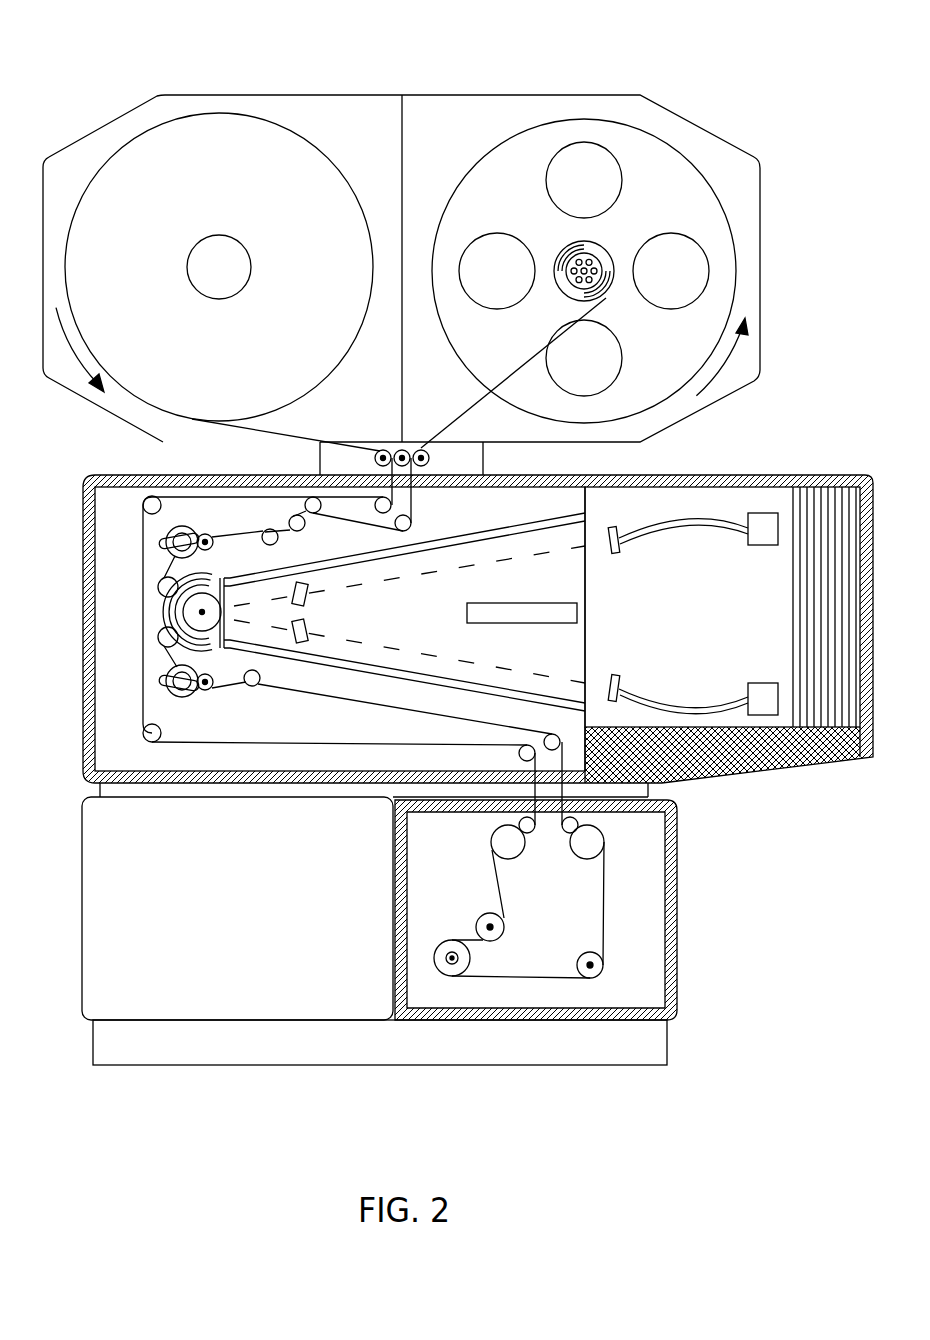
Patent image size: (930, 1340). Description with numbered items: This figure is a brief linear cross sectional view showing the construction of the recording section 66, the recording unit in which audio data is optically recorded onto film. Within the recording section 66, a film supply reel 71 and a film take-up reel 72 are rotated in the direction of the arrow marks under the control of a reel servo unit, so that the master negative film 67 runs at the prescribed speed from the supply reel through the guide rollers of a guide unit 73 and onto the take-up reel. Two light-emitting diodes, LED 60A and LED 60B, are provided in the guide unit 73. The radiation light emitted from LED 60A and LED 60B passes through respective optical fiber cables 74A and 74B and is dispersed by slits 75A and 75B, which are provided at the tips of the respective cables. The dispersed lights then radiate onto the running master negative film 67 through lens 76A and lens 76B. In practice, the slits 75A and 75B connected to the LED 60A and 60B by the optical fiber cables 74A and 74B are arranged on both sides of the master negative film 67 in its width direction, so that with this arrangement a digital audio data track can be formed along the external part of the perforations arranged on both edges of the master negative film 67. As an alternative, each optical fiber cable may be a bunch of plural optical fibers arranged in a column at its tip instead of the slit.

The recording section 66 is at (421, 23).
The film supply reel 71 is at (143, 133).
The film take-up reel 72 is at (680, 150).
The master negative film 67 is at (460, 411).
The guide unit 73 is at (98, 466).
The LED 60A is at (757, 513).
The LED 60B is at (763, 717).
The optical fiber cable 74A is at (657, 538).
The optical fiber cable 74B is at (657, 688).
The slit 75A is at (617, 553).
The slit 75B is at (617, 676).
The lens 76A is at (308, 596).
The lens 76B is at (308, 631).